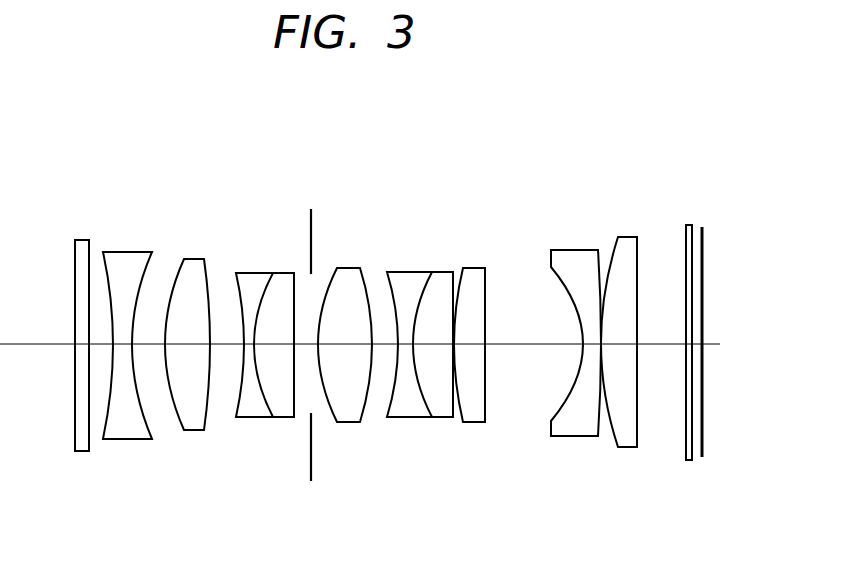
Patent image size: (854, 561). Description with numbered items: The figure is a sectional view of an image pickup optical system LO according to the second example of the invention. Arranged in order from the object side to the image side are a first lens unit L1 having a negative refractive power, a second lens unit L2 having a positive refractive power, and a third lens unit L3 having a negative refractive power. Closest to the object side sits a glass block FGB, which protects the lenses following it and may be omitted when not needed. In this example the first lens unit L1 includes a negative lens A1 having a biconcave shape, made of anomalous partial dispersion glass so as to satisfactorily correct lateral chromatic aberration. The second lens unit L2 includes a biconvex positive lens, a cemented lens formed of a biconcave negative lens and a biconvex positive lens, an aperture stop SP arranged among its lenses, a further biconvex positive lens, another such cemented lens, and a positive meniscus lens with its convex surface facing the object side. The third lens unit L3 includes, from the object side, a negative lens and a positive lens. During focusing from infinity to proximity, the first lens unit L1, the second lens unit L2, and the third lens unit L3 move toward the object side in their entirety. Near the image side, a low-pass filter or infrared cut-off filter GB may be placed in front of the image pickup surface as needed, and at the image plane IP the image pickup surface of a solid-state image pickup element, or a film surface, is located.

The image pickup optical system LO is at (636, 130).
The first lens unit L1 is at (152, 200).
The second lens unit L2 is at (484, 200).
The third lens unit L3 is at (551, 200).
The negative lens A1 is at (137, 439).
The aperture stop SP is at (308, 237).
The glass block FGB is at (74, 437).
The low-pass filter or infrared cut-off filter GB is at (686, 455).
The image plane IP is at (704, 250).